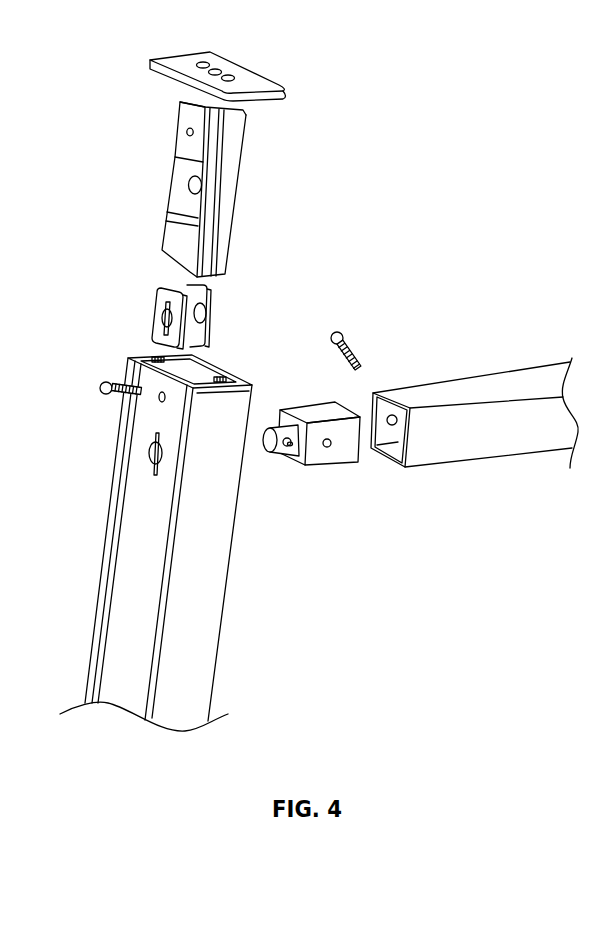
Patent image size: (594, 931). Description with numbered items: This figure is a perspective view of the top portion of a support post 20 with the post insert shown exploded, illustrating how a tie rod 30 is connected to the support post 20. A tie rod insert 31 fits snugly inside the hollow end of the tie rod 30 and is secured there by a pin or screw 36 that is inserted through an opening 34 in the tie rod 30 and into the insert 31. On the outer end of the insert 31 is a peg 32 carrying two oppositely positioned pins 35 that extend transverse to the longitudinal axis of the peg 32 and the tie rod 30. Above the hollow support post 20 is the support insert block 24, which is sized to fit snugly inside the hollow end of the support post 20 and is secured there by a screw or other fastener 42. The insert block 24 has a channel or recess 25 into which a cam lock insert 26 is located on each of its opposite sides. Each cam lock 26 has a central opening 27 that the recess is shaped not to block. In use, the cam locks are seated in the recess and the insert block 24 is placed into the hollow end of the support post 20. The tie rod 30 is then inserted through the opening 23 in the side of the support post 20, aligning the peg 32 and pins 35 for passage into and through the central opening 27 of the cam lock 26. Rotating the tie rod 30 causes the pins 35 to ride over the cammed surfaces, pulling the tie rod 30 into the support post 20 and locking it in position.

The support post 20 is at (111, 511).
The opening 23 is at (150, 452).
The support insert block 24 is at (179, 141).
The channel or recess 25 is at (183, 197).
The cam lock insert 26 is at (157, 292).
The central opening 27 is at (152, 333).
The tie rod 30 is at (520, 379).
The tie rod insert 31 is at (323, 410).
The peg 32 is at (268, 454).
The opening 34 is at (392, 413).
The pins 35 is at (287, 449).
The pin or screw 36 is at (364, 349).
The screw or other fastener 42 is at (99, 388).